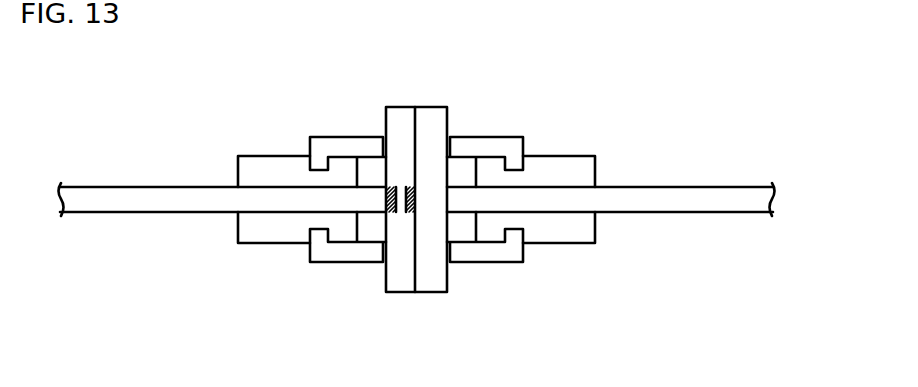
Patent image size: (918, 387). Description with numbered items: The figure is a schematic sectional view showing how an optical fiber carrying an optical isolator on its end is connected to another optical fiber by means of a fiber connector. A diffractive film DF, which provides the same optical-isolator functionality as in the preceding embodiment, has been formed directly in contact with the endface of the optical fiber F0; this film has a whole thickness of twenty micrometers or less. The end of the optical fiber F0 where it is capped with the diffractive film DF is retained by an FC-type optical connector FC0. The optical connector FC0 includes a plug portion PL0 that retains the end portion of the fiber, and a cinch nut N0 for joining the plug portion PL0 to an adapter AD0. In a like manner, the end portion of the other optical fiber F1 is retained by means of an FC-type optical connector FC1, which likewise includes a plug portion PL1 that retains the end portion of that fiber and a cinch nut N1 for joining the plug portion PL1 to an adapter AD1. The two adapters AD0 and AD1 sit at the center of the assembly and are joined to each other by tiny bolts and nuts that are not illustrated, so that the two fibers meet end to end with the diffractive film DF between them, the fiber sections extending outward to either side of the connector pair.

The optical fiber F0 is at (137, 213).
The other optical fiber F1 is at (688, 213).
The plug portion PL0 is at (278, 232).
The plug portion PL1 is at (565, 237).
The cinch nut N0 is at (342, 250).
The cinch nut N1 is at (485, 236).
The adapter AD0 is at (400, 105).
The adapter AD1 is at (438, 105).
The diffractive film DF is at (383, 214).
The optical connector FC0 is at (312, 262).
The optical connector FC1 is at (522, 262).